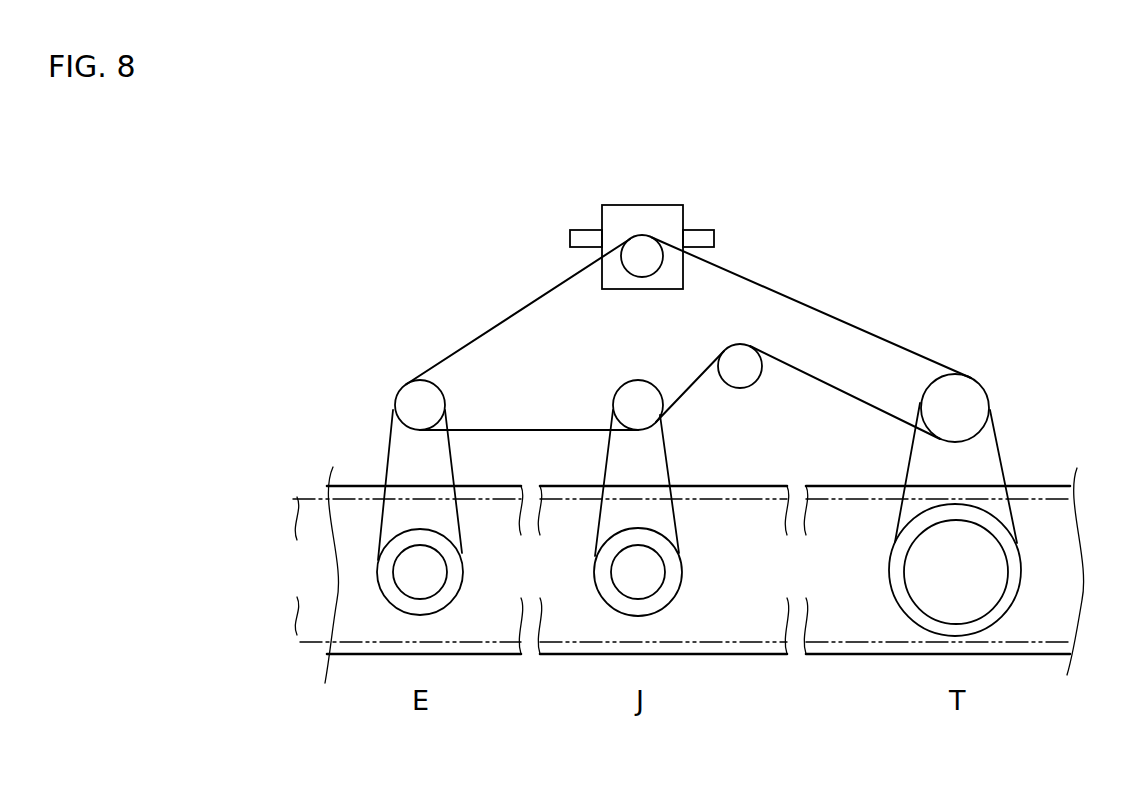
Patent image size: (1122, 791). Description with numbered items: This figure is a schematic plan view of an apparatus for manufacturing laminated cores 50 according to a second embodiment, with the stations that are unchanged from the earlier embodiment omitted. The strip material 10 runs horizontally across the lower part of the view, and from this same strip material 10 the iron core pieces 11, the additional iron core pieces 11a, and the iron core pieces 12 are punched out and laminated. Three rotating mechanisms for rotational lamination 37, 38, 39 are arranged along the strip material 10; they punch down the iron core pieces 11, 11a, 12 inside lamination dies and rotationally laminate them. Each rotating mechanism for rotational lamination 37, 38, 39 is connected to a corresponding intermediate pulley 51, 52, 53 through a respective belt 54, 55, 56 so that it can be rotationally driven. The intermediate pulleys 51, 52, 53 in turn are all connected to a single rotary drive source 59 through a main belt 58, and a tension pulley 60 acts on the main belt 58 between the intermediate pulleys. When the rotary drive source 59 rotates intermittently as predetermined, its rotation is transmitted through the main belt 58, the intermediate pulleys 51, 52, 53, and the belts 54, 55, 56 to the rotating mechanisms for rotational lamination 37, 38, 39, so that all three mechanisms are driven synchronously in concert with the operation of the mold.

The strip material 10 is at (313, 627).
The iron core piece 11 is at (410, 583).
The additional iron core piece 11a is at (628, 580).
The iron core piece 12 is at (975, 593).
The rotating mechanism for rotational lamination 37 is at (447, 605).
The rotating mechanism for rotational lamination 38 is at (669, 603).
The rotating mechanism for rotational lamination 39 is at (908, 620).
The apparatus for manufacturing laminated cores 50 is at (1032, 462).
The intermediate pulley 51 is at (410, 398).
The intermediate pulley 52 is at (637, 393).
The intermediate pulley 53 is at (962, 395).
The belt 54 is at (388, 443).
The belt 55 is at (604, 458).
The belt 56 is at (998, 445).
The main belt 58 is at (818, 310).
The rotary drive source 59 is at (637, 205).
The tension pulley 60 is at (740, 388).